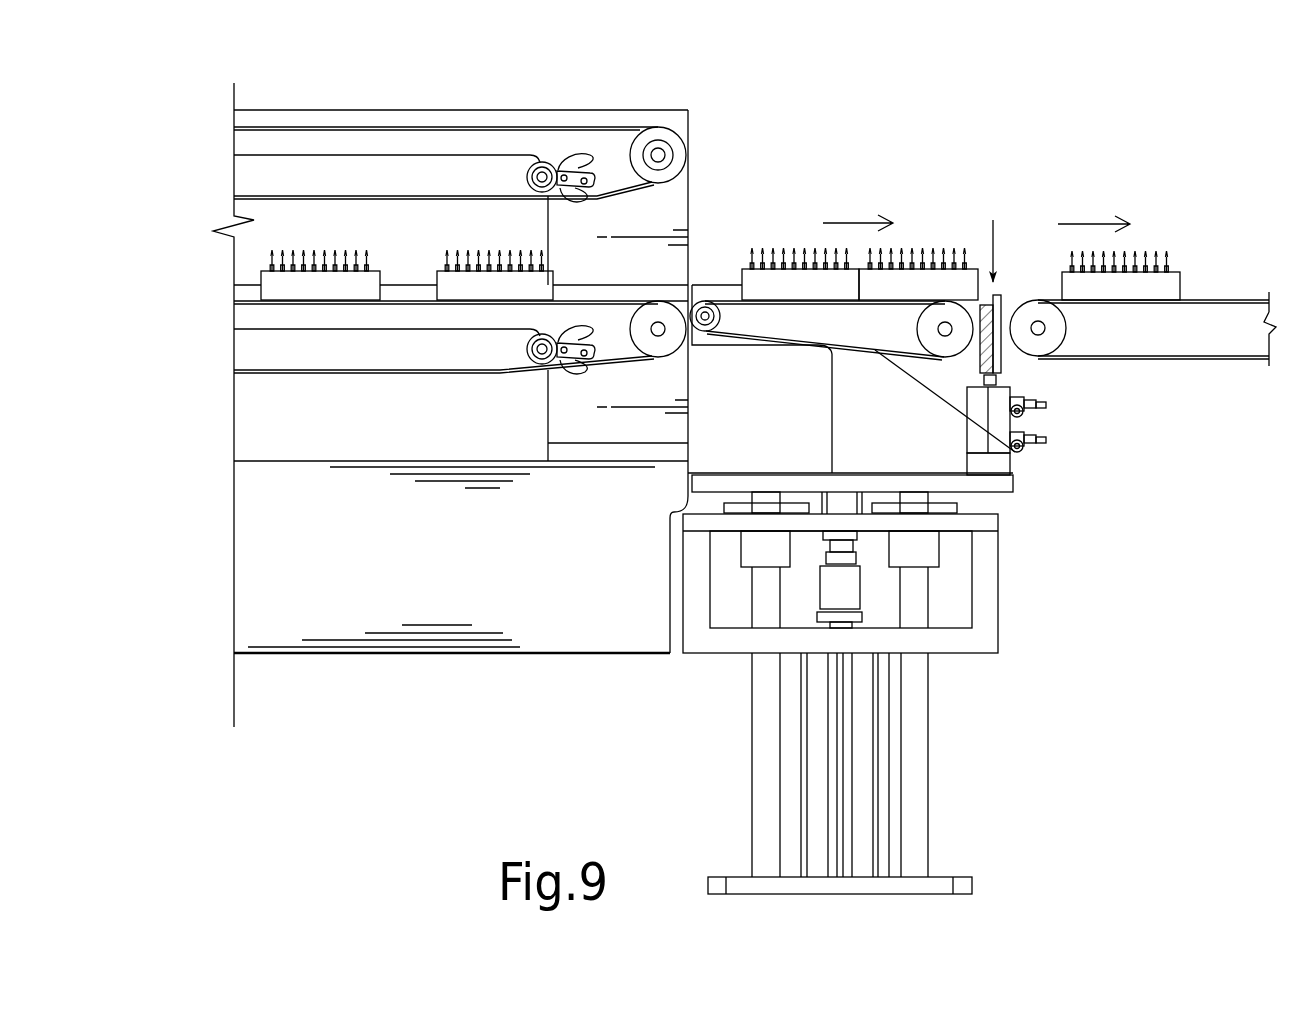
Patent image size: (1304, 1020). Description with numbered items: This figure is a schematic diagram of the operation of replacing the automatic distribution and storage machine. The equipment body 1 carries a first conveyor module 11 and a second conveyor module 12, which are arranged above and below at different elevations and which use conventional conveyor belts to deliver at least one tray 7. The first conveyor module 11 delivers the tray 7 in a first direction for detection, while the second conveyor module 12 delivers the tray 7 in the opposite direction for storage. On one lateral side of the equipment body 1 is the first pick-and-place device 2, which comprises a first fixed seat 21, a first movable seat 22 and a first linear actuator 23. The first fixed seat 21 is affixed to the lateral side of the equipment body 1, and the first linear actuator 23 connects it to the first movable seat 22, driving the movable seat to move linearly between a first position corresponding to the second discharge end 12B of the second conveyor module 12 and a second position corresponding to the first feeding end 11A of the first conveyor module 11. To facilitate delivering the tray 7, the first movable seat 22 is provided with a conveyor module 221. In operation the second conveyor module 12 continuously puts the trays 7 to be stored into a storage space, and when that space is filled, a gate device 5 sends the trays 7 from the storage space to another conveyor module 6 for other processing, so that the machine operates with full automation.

The equipment body 1 is at (455, 652).
The first conveyor module 11 is at (283, 122).
The first feeding end 11A is at (687, 128).
The second conveyor module 12 is at (240, 308).
The second discharge end 12B is at (667, 357).
The tray 7 is at (287, 290).
The gate device 5 is at (1003, 368).
The another conveyor module 6 is at (1185, 358).
The first pick-and-place device 2 is at (907, 557).
The first fixed seat 21 is at (985, 588).
The first movable seat 22 is at (1000, 485).
The conveyor module 221 is at (1013, 455).
The first linear actuator 23 is at (915, 805).